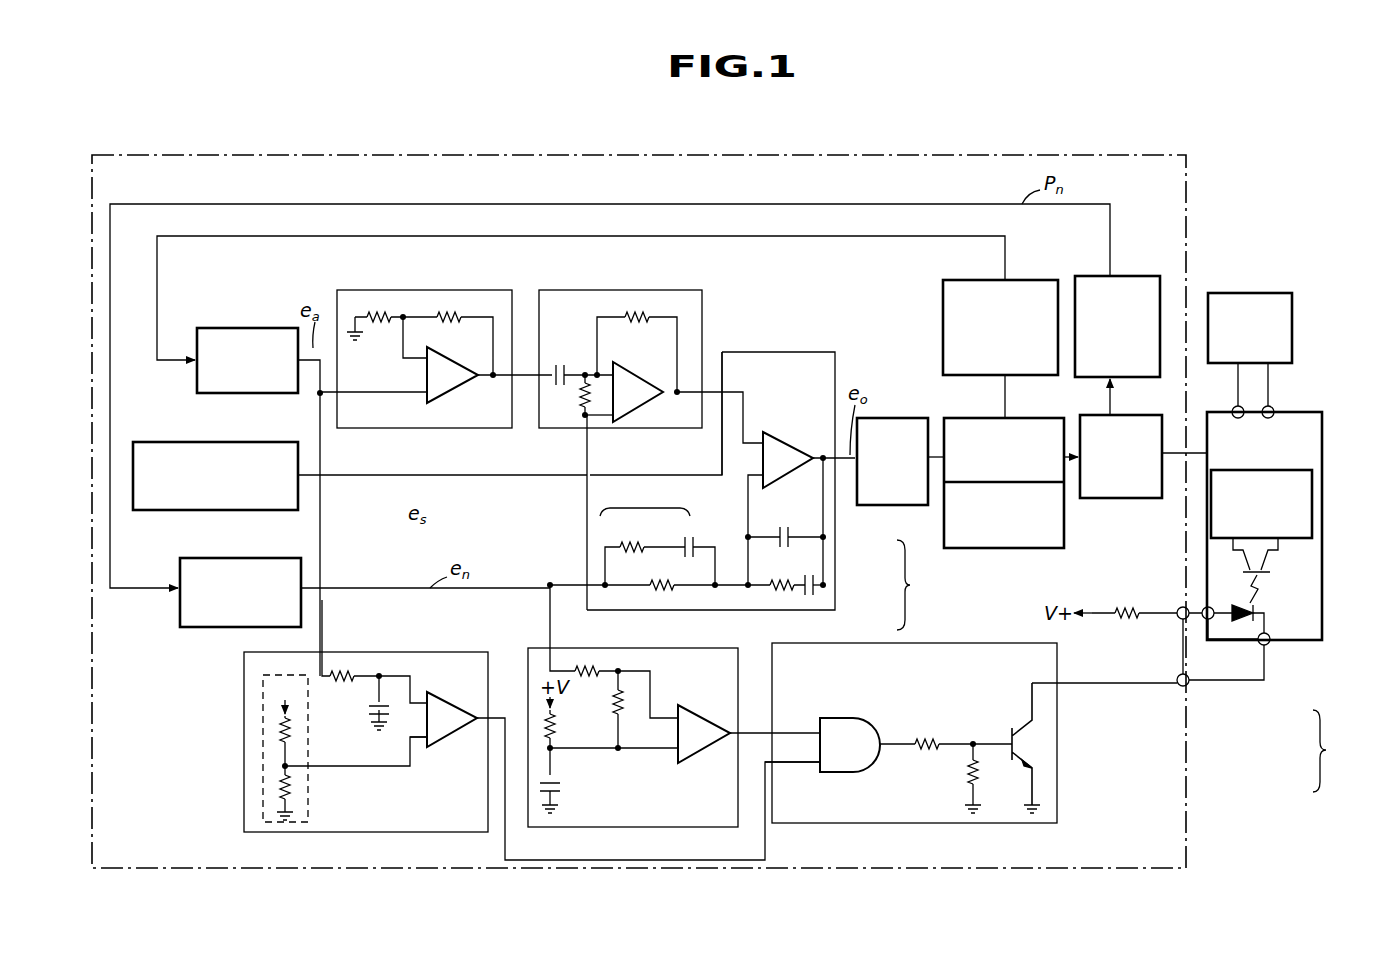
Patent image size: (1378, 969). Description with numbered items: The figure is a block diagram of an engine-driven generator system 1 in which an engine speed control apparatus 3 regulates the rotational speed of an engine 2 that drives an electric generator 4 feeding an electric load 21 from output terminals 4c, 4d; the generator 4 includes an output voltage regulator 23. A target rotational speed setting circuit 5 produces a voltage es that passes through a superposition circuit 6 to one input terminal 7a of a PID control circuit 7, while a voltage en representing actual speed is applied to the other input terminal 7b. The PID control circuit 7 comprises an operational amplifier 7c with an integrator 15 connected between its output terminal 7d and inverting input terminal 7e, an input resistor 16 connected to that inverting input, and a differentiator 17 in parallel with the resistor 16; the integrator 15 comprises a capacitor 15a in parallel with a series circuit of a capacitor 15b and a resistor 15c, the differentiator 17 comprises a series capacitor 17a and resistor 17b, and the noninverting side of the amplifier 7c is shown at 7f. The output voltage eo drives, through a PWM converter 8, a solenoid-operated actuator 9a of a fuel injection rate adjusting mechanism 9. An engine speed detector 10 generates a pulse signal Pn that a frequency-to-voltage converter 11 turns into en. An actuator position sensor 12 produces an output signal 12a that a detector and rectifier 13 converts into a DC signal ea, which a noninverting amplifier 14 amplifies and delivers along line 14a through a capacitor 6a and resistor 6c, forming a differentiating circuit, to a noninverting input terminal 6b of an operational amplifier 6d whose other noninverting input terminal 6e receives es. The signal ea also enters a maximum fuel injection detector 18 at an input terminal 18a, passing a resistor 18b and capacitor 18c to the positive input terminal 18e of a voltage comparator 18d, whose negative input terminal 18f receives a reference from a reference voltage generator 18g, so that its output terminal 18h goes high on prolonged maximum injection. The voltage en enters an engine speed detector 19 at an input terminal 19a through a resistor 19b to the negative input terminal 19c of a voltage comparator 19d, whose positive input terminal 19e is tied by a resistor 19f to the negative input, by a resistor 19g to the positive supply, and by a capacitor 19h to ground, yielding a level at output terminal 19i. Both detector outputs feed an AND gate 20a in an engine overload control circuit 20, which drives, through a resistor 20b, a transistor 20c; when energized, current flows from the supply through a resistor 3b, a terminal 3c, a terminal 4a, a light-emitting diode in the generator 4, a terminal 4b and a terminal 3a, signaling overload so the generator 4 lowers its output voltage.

The engine-driven generator system 1 is at (1331, 751).
The engine 2 is at (1135, 498).
The engine speed control apparatus 3 is at (1190, 790).
The terminal 3a is at (1188, 686).
The resistor 3b is at (1128, 607).
The terminal 3c is at (1179, 607).
The electric generator 4 is at (1322, 474).
The terminal 4a is at (1208, 620).
The terminal 4b is at (1268, 646).
The output terminal 4c is at (1234, 406).
The output terminal 4d is at (1282, 396).
The target rotational speed setting circuit 5 is at (200, 440).
The superposition circuit 6 is at (705, 302).
The capacitor 6a is at (560, 363).
The noninverting input terminal 6b is at (615, 367).
The resistor 6c is at (581, 396).
The operational amplifier 6d is at (658, 415).
The noninverting input terminal 6e is at (616, 422).
The PID control circuit 7 is at (785, 350).
The input terminal 7a is at (724, 385).
The input terminal 7b is at (582, 582).
The operational amplifier 7c is at (799, 434).
The output terminal 7d is at (808, 478).
The inverting input terminal 7e is at (760, 477).
The non-inverting input 7f is at (762, 440).
The PWM converter 8 is at (897, 416).
The fuel injection rate adjusting mechanism 9 is at (944, 505).
The solenoid-operated actuator 9a is at (990, 416).
The engine speed detector 10 is at (1137, 275).
The frequency-to-voltage converter 11 is at (205, 557).
The actuator position sensor 12 is at (943, 350).
The output signal 12a is at (916, 236).
The detector and rectifier 13 is at (247, 326).
The noninverting amplifier 14 is at (398, 290).
The amplifier output line 14a is at (518, 372).
The integrator 15 is at (887, 544).
The capacitor 15a is at (823, 540).
The capacitor 15b is at (823, 585).
The resistor 15c is at (800, 592).
The input resistor 16 is at (668, 579).
The differentiator 17 is at (657, 534).
The capacitor 17a is at (692, 540).
The resistor 17b is at (628, 545).
The maximum fuel injection detector 18 is at (424, 652).
The input terminal 18a is at (325, 652).
The resistor 18b is at (352, 680).
The capacitor 18c is at (393, 715).
The voltage comparator 18d is at (462, 742).
The positive input terminal 18e is at (426, 696).
The negative input terminal 18f is at (427, 742).
The reference voltage generator 18g is at (308, 775).
The output terminal 18h is at (496, 722).
The engine speed detector 19 is at (740, 675).
The input terminal 19a is at (548, 648).
The resistor 19b is at (587, 668).
The negative input terminal 19c is at (683, 716).
The voltage comparator 19d is at (755, 733).
The positive input terminal 19e is at (680, 752).
The resistor 19f is at (625, 728).
The resistor 19g is at (556, 746).
The capacitor 19h is at (565, 790).
The output terminal 19i is at (768, 764).
The engine overload control circuit 20 is at (957, 643).
The AND gate 20a is at (850, 718).
The resistor 20b is at (936, 740).
The transistor 20c is at (1020, 725).
The electric load 21 is at (1238, 292).
The output voltage regulator 23 is at (1312, 500).